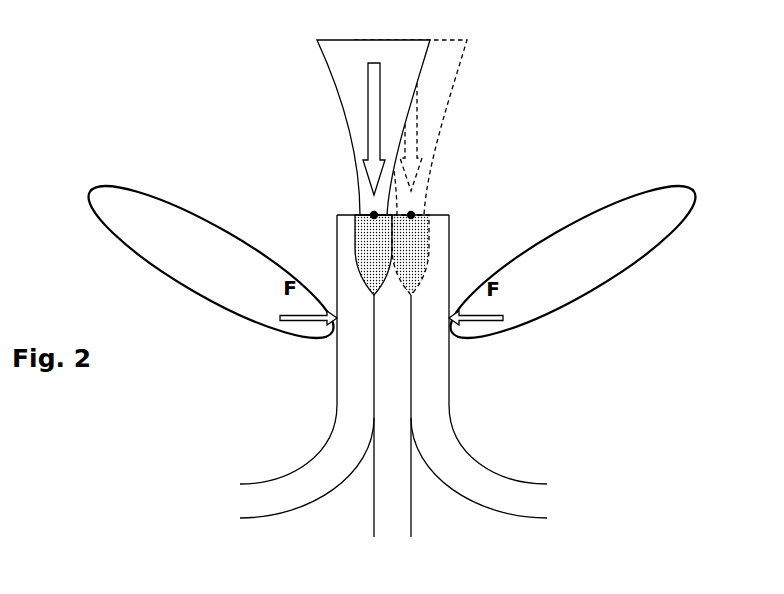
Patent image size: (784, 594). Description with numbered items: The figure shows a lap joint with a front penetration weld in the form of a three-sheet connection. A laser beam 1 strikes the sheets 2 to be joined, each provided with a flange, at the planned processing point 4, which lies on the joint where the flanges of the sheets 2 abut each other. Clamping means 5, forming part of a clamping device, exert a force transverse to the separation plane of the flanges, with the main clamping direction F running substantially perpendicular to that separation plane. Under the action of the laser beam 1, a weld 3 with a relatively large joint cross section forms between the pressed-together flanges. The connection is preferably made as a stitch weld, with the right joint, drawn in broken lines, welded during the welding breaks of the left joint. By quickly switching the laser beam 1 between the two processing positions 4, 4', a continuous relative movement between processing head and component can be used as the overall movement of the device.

The laser beam 1 is at (358, 108).
The sheets 2 is at (347, 345).
The weld 3 is at (359, 240).
The processing point 4 is at (273, 180).
The processing position 4' is at (484, 185).
The clamping means 5 is at (228, 277).